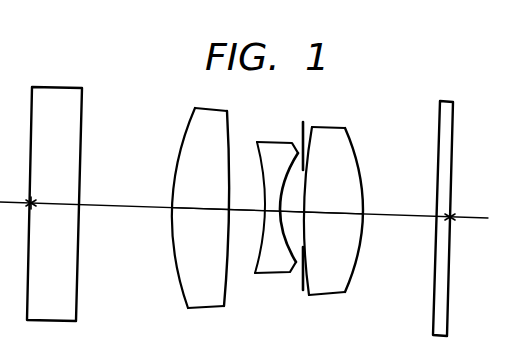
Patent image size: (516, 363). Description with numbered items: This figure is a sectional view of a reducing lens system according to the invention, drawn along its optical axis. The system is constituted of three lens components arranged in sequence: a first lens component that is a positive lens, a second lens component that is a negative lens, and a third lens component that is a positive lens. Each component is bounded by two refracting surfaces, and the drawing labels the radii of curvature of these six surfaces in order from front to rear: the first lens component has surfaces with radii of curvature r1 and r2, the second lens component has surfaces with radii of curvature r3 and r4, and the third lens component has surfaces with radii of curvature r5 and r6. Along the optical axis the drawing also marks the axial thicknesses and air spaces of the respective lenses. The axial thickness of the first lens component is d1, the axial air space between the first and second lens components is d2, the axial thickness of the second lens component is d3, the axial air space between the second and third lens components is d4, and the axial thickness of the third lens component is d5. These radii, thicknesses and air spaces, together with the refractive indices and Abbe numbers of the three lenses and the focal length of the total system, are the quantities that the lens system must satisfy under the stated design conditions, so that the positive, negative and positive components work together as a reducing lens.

The radius of curvature of first lens surface r1 is at (183, 297).
The radius of curvature of second lens surface r2 is at (225, 300).
The radius of curvature of third lens surface r3 is at (255, 260).
The radius of curvature of fourth lens surface r4 is at (287, 262).
The radius of curvature of fifth lens surface r5 is at (307, 293).
The radius of curvature of sixth lens surface r6 is at (352, 292).
The axial thickness of first lens component d1 is at (197, 208).
The axial air space between first and second lens components d2 is at (245, 209).
The axial thickness of second lens component d3 is at (273, 210).
The axial air space between second and third lens components d4 is at (297, 209).
The axial thickness of third lens component d5 is at (335, 212).